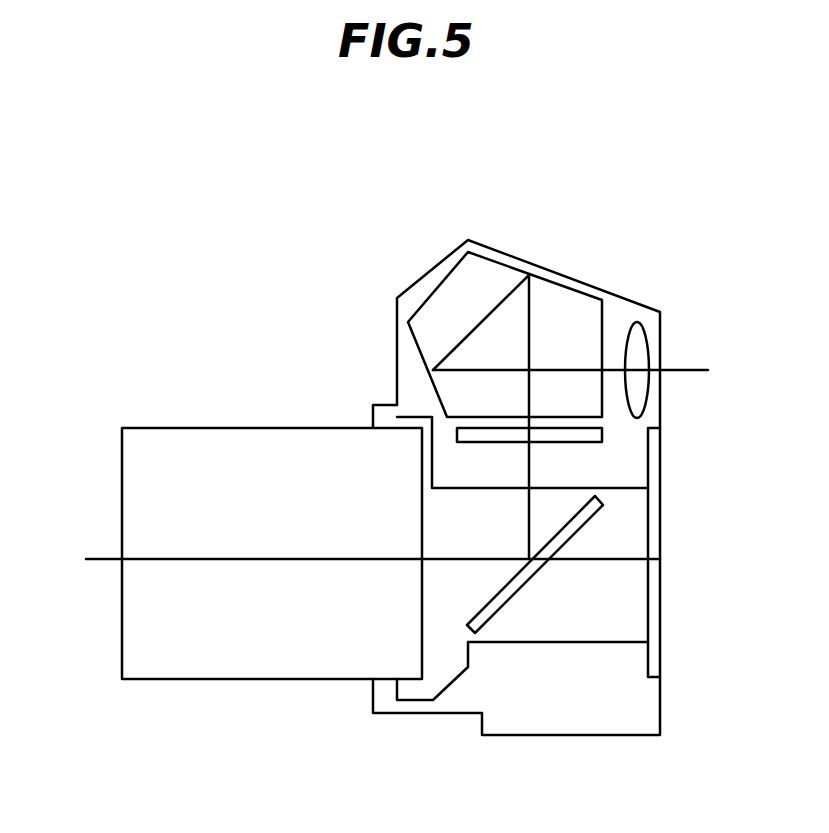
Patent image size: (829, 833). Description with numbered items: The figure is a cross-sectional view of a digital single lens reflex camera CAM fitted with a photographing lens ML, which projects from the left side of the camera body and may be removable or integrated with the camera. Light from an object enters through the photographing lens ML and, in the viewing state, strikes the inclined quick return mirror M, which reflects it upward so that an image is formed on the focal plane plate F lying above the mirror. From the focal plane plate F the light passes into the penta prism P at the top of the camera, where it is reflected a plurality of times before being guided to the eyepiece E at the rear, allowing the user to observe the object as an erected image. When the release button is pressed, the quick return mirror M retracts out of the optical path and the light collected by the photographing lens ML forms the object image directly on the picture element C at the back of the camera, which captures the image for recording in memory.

The digital single lens reflex camera CAM is at (215, 329).
The photographing lens ML is at (198, 442).
The penta prism P is at (540, 292).
The eyepiece E is at (635, 348).
The focal plane plate F is at (603, 441).
The picture element C is at (657, 537).
The quick return mirror M is at (522, 590).